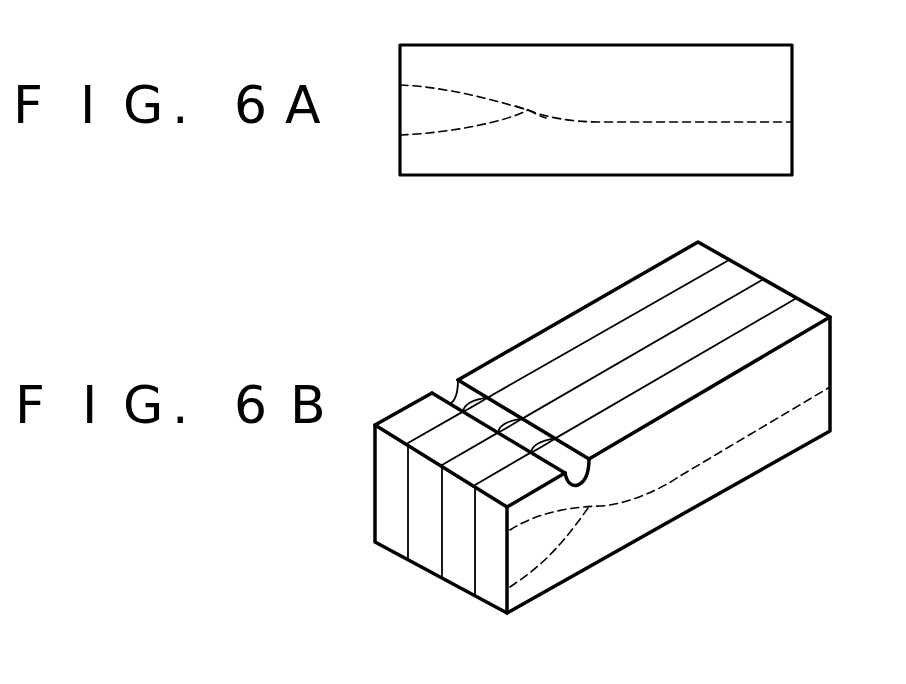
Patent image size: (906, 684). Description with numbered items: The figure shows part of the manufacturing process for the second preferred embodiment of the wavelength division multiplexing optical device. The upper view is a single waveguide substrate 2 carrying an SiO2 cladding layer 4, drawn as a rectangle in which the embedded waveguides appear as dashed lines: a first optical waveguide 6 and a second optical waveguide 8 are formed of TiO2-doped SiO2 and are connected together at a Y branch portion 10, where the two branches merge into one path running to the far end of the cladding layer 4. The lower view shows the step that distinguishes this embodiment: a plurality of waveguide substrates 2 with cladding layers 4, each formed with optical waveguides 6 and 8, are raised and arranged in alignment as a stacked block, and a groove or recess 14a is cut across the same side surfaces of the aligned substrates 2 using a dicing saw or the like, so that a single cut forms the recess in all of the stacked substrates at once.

In FIG. 6B, the silicon substrate 2 is at (706, 259).
In FIG. 6A, the cladding layer 4 is at (701, 56).
In FIG. 6B, the cladding layer 4 is at (817, 433).
In FIG. 6A, the first optical waveguide 6 is at (625, 127).
In FIG. 6B, the first optical waveguide 6 is at (678, 478).
In FIG. 6A, the second optical waveguide 8 is at (458, 133).
In FIG. 6B, the second optical waveguide 8 is at (552, 561).
In FIG. 6A, the Y branch portion 10 is at (531, 108).
In FIG. 6B, the groove 14a is at (505, 417).